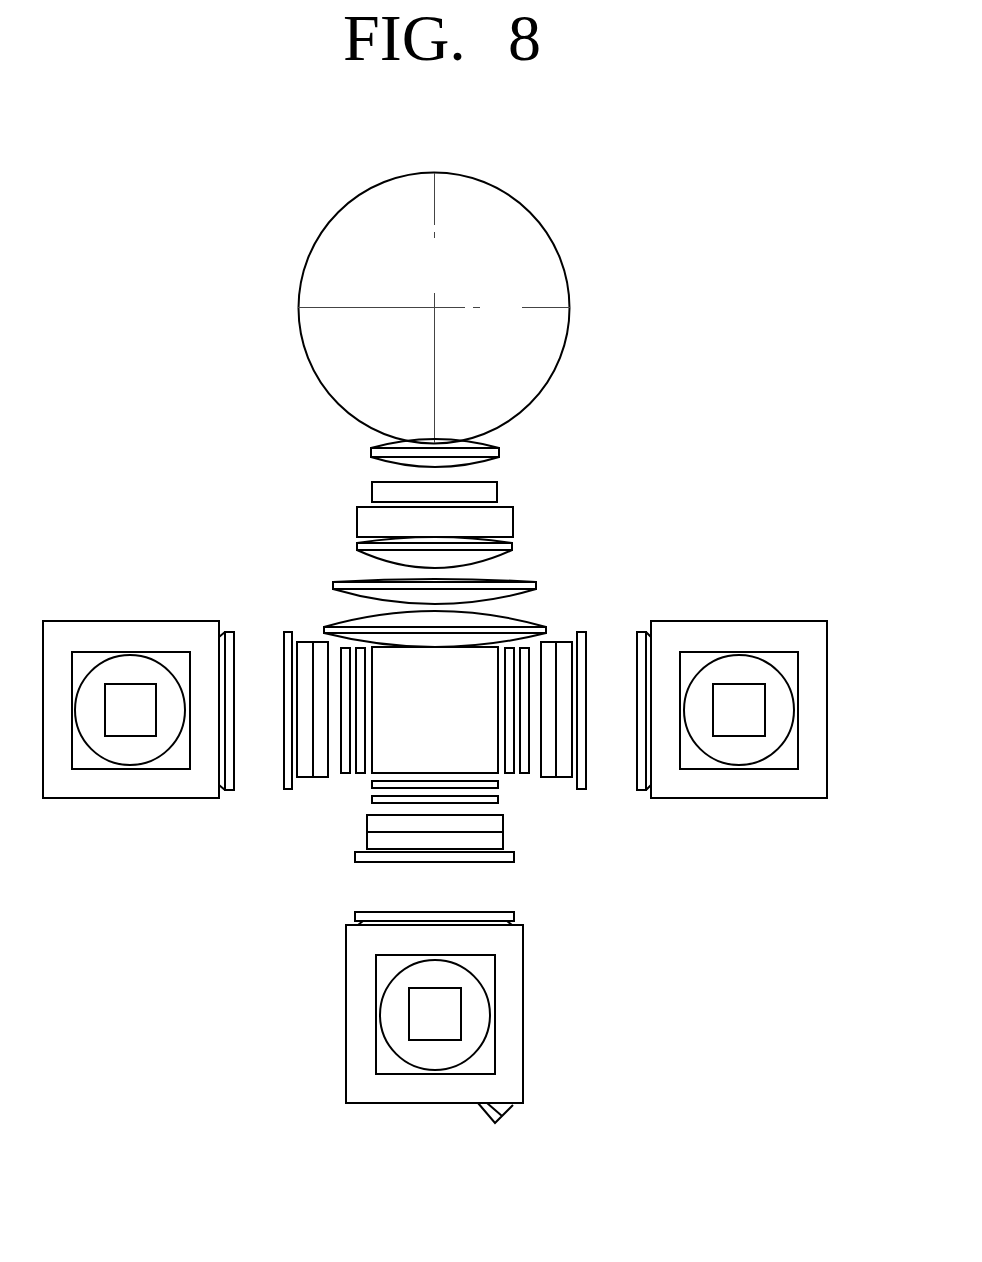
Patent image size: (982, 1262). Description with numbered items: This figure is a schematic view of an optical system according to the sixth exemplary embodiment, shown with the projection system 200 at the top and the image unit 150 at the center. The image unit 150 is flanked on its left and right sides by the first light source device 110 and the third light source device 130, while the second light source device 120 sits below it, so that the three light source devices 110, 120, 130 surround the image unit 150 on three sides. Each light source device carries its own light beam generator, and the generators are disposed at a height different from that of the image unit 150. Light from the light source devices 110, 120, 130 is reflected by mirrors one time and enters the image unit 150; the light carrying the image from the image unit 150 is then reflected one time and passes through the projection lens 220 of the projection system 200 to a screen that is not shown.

The projection system 200 is at (459, 381).
The projection lens 220 is at (540, 375).
The image unit 150 is at (382, 762).
The first light source device 110 is at (102, 632).
The second light source device 120 is at (515, 1008).
The third light source device 130 is at (712, 633).